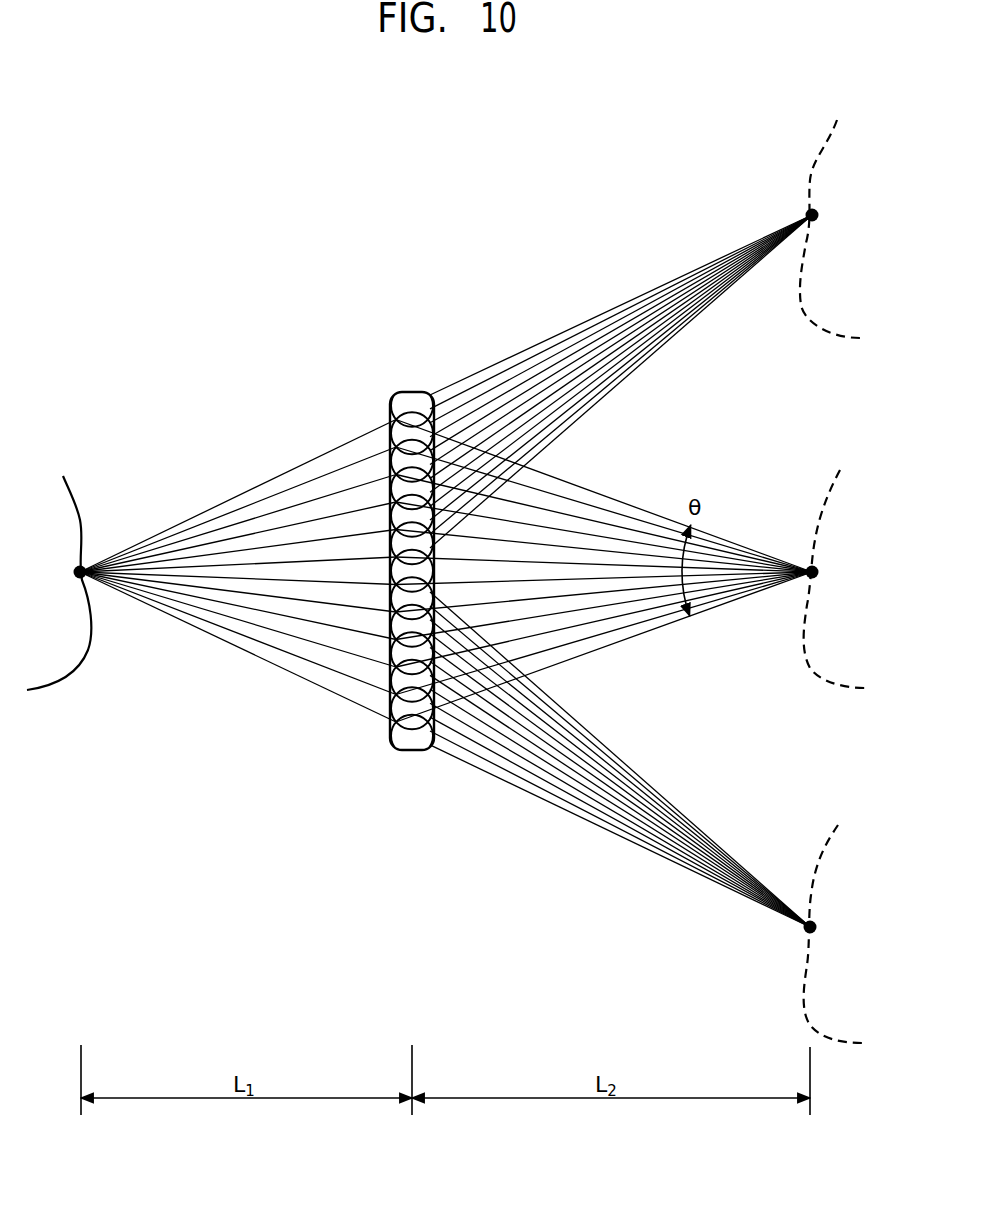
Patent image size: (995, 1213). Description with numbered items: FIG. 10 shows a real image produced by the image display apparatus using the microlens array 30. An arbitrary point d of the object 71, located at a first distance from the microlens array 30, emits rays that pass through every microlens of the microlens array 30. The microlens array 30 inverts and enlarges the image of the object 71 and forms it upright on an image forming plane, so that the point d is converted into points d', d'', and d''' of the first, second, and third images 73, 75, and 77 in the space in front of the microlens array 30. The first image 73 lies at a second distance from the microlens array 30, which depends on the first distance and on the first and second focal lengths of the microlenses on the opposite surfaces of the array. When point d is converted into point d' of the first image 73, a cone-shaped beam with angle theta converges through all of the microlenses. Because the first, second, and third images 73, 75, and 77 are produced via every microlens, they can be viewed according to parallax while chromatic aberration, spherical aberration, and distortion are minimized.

The microlens array 30 is at (426, 389).
The object 71 is at (63, 476).
The first image 73 is at (840, 472).
The second image 75 is at (810, 172).
The third image 77 is at (800, 973).